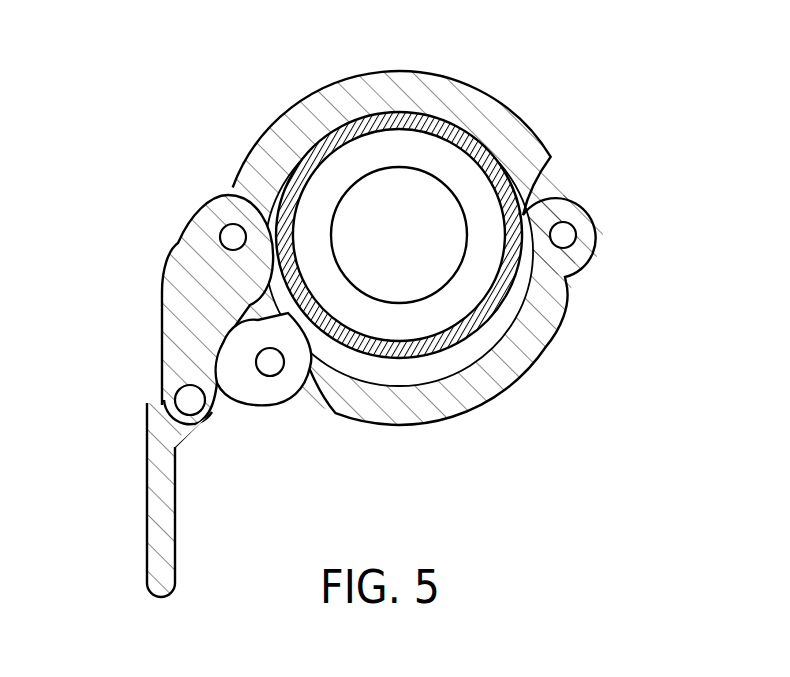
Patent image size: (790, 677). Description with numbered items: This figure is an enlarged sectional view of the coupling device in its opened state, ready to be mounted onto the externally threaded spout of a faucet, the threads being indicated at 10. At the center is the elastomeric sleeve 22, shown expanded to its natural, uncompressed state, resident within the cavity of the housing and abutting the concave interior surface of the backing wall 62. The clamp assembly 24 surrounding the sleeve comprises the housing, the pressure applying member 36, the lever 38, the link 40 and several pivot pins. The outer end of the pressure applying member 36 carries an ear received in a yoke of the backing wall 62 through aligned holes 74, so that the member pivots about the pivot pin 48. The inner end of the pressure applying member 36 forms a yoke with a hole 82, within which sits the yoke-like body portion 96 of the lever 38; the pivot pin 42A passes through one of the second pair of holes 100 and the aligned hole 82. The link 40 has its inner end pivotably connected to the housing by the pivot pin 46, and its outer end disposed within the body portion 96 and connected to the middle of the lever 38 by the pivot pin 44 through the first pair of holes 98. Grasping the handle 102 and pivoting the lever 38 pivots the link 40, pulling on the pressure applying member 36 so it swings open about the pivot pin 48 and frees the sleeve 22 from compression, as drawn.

The external threads 10 is at (462, 295).
The elastomeric sleeve 22 is at (317, 140).
The clamp assembly 24 is at (536, 130).
The pressure applying member 36 is at (487, 390).
The lever 38 is at (147, 505).
The link 40 is at (163, 298).
The pivot pin 42A is at (270, 362).
The pivot pin 44 is at (176, 403).
The pivot pin 46 is at (228, 193).
The pivot pin 48 is at (565, 228).
The backing wall 62 is at (500, 101).
The holes 74 is at (577, 237).
The hole 82 is at (220, 242).
The yoke-like body portion 96 is at (247, 388).
The first pair of holes 98 is at (213, 422).
The second pair of holes 100 is at (274, 376).
The handle 102 is at (147, 545).